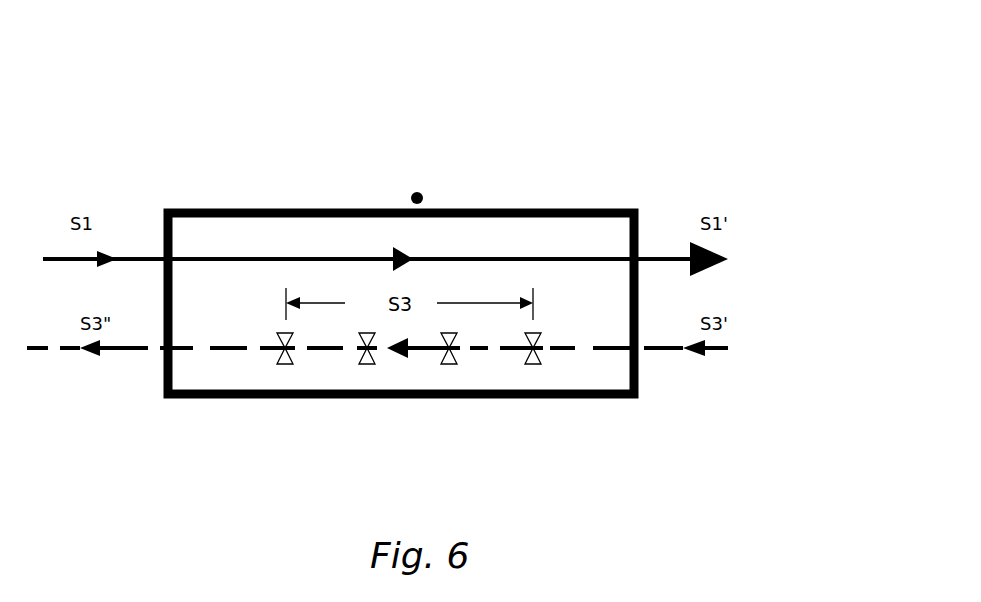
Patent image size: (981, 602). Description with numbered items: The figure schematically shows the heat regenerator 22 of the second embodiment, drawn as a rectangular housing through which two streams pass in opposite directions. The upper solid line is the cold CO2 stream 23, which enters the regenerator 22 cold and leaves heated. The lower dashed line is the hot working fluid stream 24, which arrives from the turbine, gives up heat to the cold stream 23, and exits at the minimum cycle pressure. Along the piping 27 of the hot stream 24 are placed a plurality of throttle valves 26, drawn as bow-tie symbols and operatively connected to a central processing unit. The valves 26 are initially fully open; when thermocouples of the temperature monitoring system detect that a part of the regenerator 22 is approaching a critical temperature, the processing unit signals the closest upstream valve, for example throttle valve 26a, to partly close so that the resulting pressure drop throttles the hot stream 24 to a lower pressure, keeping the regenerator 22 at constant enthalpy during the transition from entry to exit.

The heat regenerator 22 is at (417, 192).
The cold CO2 stream 23 is at (507, 258).
The hot working fluid stream 24 is at (220, 350).
The throttle valves 26 is at (530, 366).
The throttle valve 26a is at (367, 366).
The piping 27 is at (577, 350).